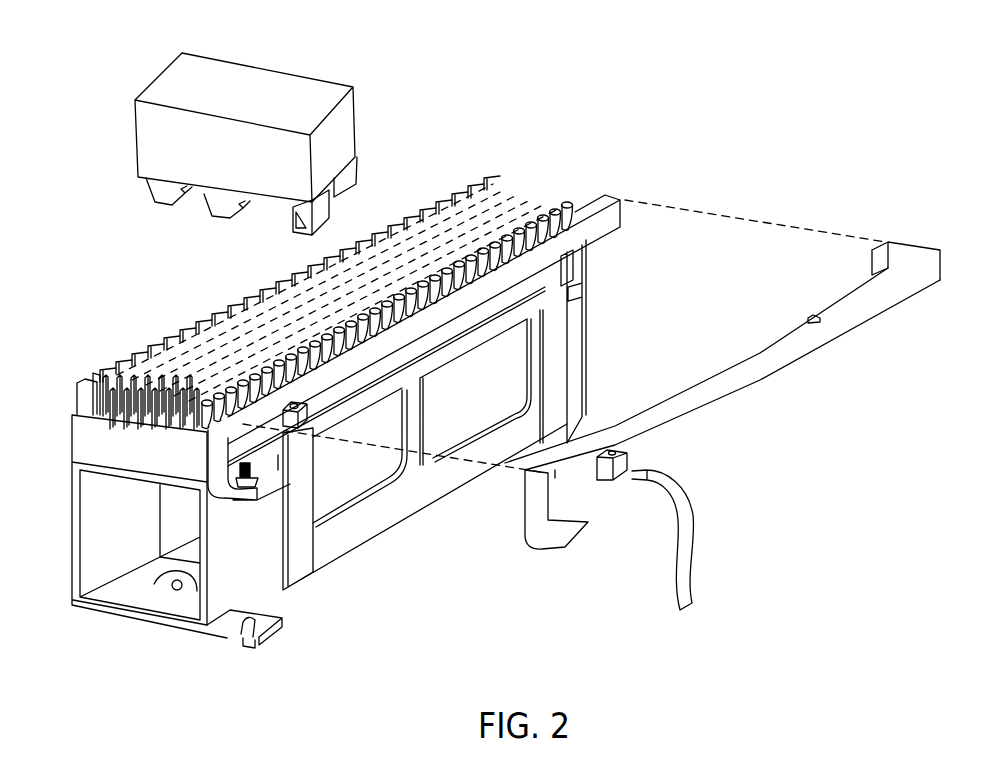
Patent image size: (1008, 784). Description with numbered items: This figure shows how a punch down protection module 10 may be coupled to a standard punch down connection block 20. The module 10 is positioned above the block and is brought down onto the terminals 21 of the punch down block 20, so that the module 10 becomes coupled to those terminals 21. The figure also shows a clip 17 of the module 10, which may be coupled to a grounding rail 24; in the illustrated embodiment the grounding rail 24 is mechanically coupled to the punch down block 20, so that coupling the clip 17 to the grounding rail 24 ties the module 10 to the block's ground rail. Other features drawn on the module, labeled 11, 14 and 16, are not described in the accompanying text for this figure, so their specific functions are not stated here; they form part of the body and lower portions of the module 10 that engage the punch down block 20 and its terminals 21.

The module 10 is at (119, 38).
The connector housing 11 is at (285, 80).
The mounting foot 14 is at (162, 195).
The mounting foot 16 is at (222, 210).
The clip 17 is at (310, 230).
The punch down block 20 is at (73, 445).
The terminals 21 is at (103, 375).
The grounding rail 24 is at (922, 254).